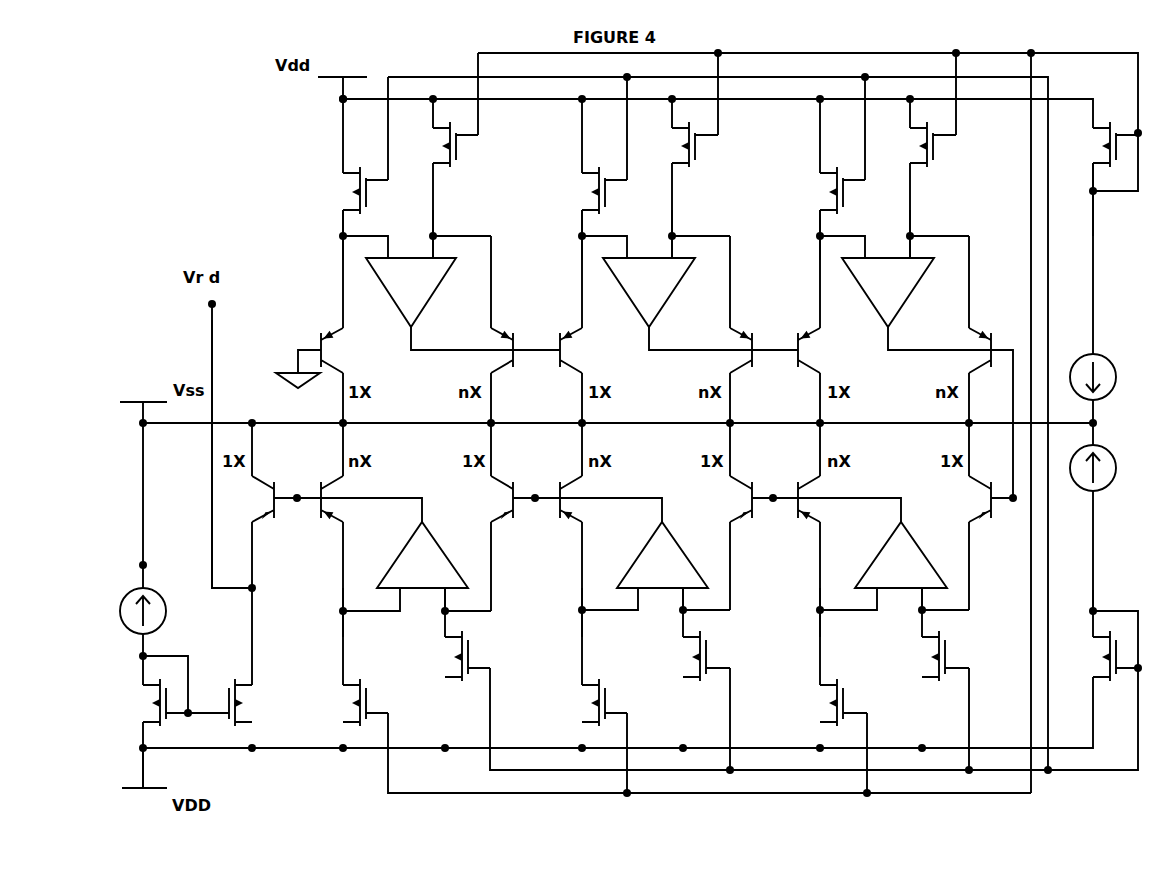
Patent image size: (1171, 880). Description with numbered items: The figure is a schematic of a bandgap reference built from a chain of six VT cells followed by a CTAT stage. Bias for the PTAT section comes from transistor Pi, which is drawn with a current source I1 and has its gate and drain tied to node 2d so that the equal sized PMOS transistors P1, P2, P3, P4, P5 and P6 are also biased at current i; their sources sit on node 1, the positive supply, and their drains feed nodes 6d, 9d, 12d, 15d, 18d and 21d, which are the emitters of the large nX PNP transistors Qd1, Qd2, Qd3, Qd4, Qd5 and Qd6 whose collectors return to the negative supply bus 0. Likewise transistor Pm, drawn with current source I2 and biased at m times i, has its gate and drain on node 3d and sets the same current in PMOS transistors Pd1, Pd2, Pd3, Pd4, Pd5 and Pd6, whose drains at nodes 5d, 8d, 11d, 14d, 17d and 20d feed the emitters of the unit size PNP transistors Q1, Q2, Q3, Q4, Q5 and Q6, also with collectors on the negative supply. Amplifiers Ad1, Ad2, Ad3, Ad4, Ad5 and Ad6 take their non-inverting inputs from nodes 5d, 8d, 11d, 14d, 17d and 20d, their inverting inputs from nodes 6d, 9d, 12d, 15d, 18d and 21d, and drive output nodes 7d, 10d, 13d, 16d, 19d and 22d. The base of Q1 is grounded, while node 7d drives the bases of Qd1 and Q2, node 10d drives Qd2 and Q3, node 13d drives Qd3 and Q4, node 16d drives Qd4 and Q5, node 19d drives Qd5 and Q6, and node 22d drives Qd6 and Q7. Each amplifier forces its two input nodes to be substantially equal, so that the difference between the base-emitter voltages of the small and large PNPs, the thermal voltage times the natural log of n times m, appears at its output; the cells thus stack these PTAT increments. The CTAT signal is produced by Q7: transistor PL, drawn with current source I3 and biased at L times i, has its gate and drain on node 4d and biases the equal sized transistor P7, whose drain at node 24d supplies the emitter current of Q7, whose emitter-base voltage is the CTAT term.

The node 1 (VDD) 1 is at (288, 441).
The ground/Vss bus node 0 is at (607, 436).
The node 2d is at (1108, 199).
The node 3d is at (1108, 613).
The node 4d is at (197, 688).
The node 5d is at (327, 235).
The node 6d is at (448, 233).
The node 7d is at (485, 333).
The node 8d is at (561, 235).
The node 9d is at (693, 233).
The node 10d is at (723, 331).
The node 11d is at (797, 235).
The node 12d is at (934, 233).
The node 13d is at (944, 414).
The node 14d is at (962, 612).
The node 15d is at (841, 624).
The node 16d is at (826, 526).
The node 17d is at (724, 612).
The node 18d is at (603, 621).
The node 19d is at (587, 526).
The node 20d is at (486, 612).
The node 21d is at (364, 621).
The node 22d is at (348, 523).
The node 24d is at (252, 471).
The current source PMOS transistor Pd1 is at (344, 190).
The current source PMOS transistor Pd2 is at (582, 190).
The current source PMOS transistor Pd3 is at (821, 190).
The current source PMOS transistor Pd4 is at (924, 658).
The current source PMOS transistor Pd5 is at (685, 658).
The current source PMOS transistor Pd6 is at (446, 658).
The current source PMOS transistor P1 is at (440, 144).
The current source PMOS transistor P2 is at (680, 144).
The current source PMOS transistor P3 is at (918, 144).
The current source PMOS transistor P4 is at (828, 704).
The current source PMOS transistor P5 is at (589, 704).
The current source PMOS transistor P6 is at (350, 704).
The PMOS transistor P7 is at (236, 704).
The transistor Pi is at (1102, 147).
The transistor Pm is at (1096, 658).
The transistor PL is at (149, 704).
The 1X PNP BJT Q1 is at (324, 358).
The 1X PNP BJT Q2 is at (586, 352).
The 1X PNP BJT Q3 is at (825, 352).
The 1X PNP BJT Q4 is at (964, 499).
The 1X PNP BJT Q5 is at (725, 499).
The 1X PNP BJT Q6 is at (485, 499).
The BJT Q7 is at (247, 499).
The nX PNP BJT Qd1 is at (480, 352).
The nX PNP BJT Qd2 is at (718, 352).
The nX PNP BJT Qd3 is at (957, 352).
The nX PNP BJT Qd4 is at (830, 499).
The nX PNP BJT Qd5 is at (592, 499).
The nX PNP BJT Qd6 is at (352, 499).
The amplifier Ad1 is at (418, 292).
The amplifier Ad2 is at (655, 292).
The amplifier Ad3 is at (894, 292).
The amplifier Ad4 is at (891, 553).
The amplifier Ad5 is at (651, 553).
The amplifier Ad6 is at (412, 554).
The current source I1 is at (1108, 381).
The current source I2 is at (1117, 468).
The current source I3 is at (164, 610).